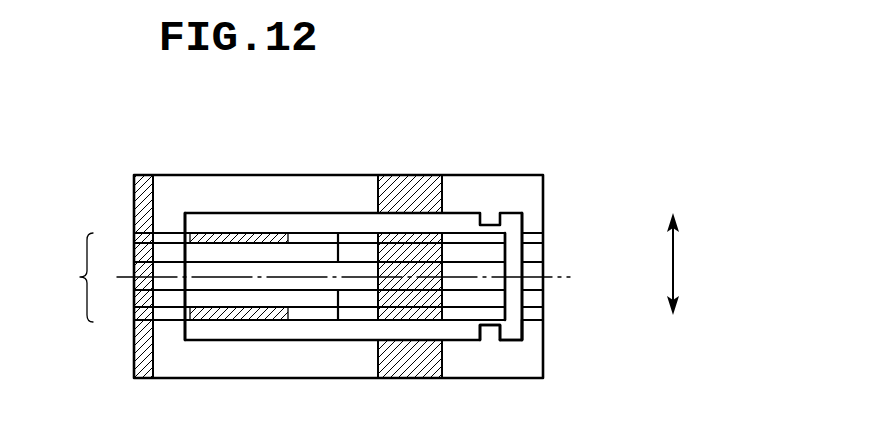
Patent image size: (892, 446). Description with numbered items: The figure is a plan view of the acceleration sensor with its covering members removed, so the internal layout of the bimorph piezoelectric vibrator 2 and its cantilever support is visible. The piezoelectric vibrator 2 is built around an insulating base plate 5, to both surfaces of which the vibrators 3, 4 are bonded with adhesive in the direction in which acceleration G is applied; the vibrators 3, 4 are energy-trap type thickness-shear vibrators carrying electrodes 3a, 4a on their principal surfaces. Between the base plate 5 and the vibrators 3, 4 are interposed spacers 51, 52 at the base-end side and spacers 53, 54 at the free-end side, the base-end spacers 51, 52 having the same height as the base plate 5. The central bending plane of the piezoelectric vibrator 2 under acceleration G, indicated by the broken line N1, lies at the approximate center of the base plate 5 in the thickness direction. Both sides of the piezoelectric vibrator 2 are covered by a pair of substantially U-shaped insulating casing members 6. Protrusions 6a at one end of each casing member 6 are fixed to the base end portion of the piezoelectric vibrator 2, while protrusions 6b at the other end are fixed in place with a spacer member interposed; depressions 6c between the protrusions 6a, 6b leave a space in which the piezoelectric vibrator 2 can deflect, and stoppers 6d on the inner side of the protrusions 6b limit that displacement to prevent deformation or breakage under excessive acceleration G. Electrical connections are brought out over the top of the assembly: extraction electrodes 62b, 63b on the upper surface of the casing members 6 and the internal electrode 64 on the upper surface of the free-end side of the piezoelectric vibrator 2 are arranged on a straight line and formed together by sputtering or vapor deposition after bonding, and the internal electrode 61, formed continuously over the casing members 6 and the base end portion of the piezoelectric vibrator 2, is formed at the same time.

The bimorph piezoelectric vibrator 2 is at (300, 277).
The vibrator 3 is at (298, 326).
The electrode 3a is at (245, 319).
The vibrator 4 is at (266, 226).
The electrode 4a is at (236, 232).
The base plate 5 is at (201, 256).
The casing member 6 is at (512, 183).
The protrusion 6a is at (171, 332).
The protrusion 6b is at (543, 331).
The depression 6c is at (313, 216).
The stopper 6d is at (490, 339).
The spacer 51 is at (165, 297).
The spacer 52 is at (165, 254).
The spacer 53 is at (498, 297).
The spacer 54 is at (493, 255).
The internal electrode 61 is at (140, 196).
The extraction electrode 62b is at (408, 372).
The extraction electrode 63b is at (418, 183).
The internal electrode 64 is at (445, 252).
The central bending plane N1 is at (557, 276).
The acceleration G is at (684, 264).